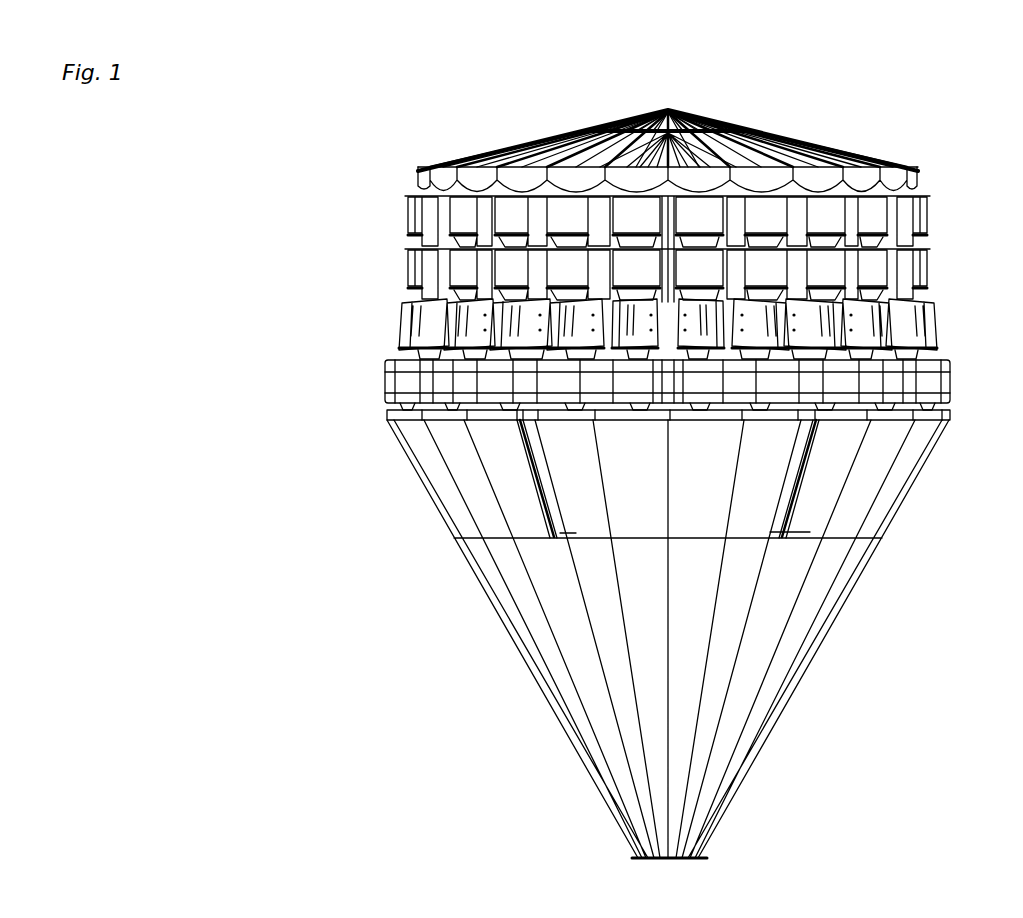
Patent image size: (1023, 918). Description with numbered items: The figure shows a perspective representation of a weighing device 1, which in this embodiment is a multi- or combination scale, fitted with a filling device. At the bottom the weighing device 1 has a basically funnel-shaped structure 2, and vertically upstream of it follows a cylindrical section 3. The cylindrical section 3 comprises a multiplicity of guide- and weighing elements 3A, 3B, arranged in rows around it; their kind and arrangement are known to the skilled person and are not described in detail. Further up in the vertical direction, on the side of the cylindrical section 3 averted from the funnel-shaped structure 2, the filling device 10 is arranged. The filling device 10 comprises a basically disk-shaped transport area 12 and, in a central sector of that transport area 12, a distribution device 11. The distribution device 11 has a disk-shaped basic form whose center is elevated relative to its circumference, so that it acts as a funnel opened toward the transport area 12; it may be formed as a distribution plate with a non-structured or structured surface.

The weighing device 1 is at (374, 472).
The funnel-shaped structure 2 is at (490, 603).
The cylindrical section 3 is at (370, 262).
The guide- and weighing element 3A is at (407, 270).
The guide- and weighing element 3B is at (407, 317).
The filling device 10 is at (456, 145).
The distribution device 11 is at (670, 111).
The transport area 12 is at (807, 143).